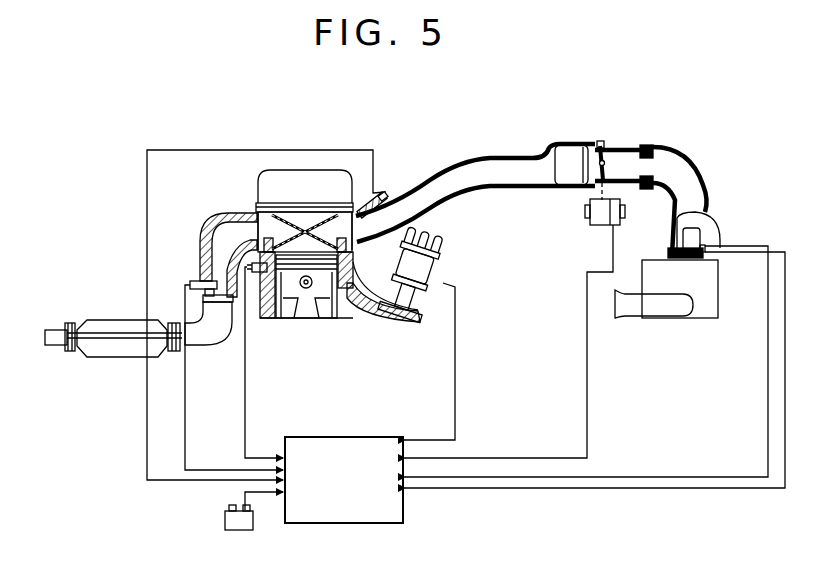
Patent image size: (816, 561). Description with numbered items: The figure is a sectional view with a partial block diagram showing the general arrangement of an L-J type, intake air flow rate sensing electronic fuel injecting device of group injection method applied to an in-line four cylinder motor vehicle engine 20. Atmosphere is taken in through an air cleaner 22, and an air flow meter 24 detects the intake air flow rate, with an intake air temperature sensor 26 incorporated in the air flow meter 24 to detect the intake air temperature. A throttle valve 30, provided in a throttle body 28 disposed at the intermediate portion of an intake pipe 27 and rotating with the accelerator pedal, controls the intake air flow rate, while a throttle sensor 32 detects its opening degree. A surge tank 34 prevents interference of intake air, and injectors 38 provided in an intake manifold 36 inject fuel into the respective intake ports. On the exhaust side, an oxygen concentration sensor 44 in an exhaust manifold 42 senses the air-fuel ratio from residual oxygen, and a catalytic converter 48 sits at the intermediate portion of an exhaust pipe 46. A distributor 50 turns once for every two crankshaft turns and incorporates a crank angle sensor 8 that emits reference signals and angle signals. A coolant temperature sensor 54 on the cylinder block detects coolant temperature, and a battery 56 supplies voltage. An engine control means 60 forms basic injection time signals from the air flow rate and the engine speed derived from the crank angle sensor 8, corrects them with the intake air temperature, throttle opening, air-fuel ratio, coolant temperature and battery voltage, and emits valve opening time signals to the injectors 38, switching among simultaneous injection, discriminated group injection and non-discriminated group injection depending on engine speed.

The crank angle sensor 8 is at (416, 274).
The motor vehicle engine 20 is at (263, 190).
The air cleaner 22 is at (718, 300).
The air flow meter 24 is at (720, 229).
The intake air temperature sensor 26 is at (705, 252).
The intake pipe 27 is at (700, 172).
The throttle body 28 is at (606, 147).
The throttle valve 30 is at (688, 187).
The throttle sensor 32 is at (620, 217).
The surge tank 34 is at (563, 143).
The intake manifold 36 is at (446, 165).
The injectors 38 is at (385, 190).
The exhaust manifold 42 is at (205, 219).
The oxygen concentration sensor 44 is at (198, 280).
The exhaust pipe 46 is at (206, 341).
The catalytic converter 48 is at (113, 357).
The distributor 50 is at (400, 272).
The coolant temperature sensor 54 is at (257, 274).
The battery 56 is at (225, 520).
The engine control means 60 is at (345, 437).